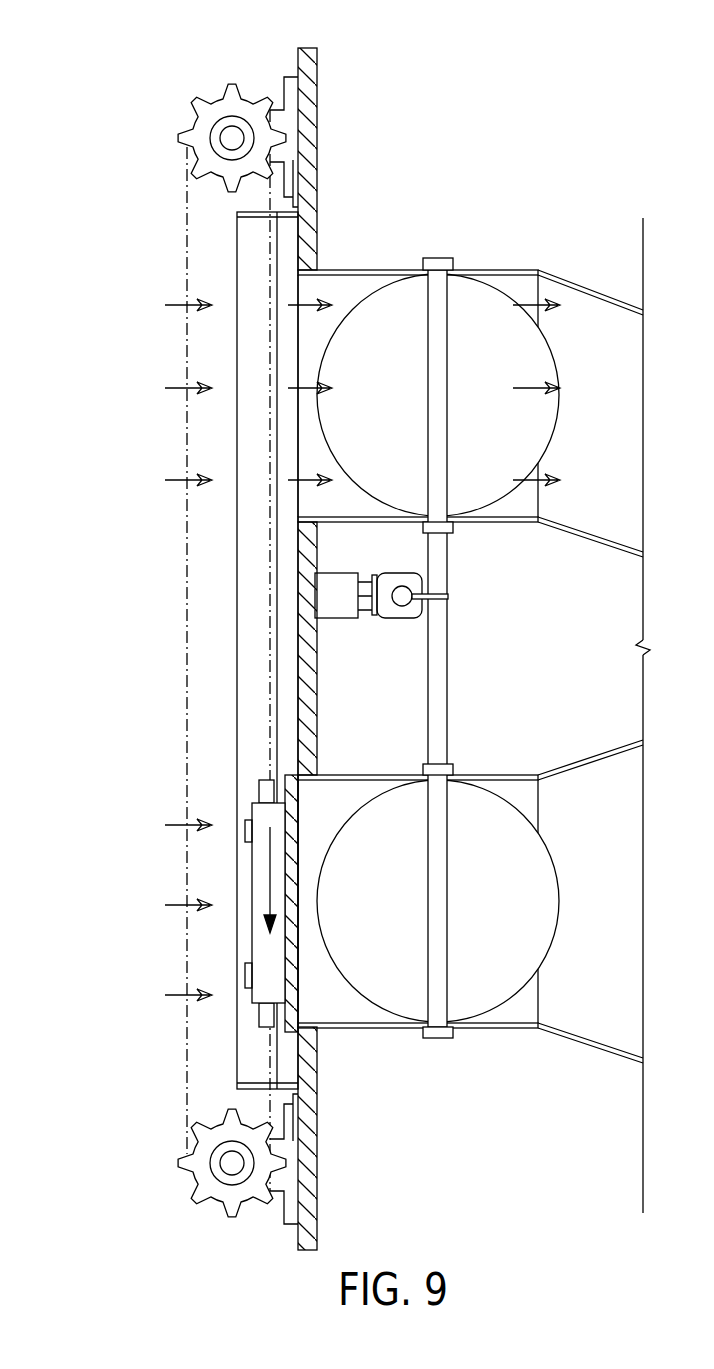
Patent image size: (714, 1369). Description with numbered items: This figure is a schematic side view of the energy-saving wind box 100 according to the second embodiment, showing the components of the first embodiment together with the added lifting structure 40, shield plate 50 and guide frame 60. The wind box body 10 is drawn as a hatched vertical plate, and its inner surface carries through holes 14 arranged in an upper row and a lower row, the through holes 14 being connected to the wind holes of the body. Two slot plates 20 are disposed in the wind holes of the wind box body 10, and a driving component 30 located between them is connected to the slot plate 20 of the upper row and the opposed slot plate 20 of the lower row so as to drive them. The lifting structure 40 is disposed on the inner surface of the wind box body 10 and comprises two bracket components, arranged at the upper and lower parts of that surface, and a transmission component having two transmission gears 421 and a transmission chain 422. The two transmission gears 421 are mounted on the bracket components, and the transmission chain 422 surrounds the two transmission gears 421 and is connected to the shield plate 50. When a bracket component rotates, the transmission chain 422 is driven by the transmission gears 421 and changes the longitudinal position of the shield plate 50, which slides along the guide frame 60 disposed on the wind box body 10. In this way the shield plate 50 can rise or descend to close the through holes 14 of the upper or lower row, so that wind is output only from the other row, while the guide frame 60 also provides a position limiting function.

The wind box body 10 is at (320, 112).
The through hole 14 is at (298, 359).
The slot plate 20 is at (484, 292).
The driving component 30 is at (460, 612).
The lifting structure 40 is at (278, 92).
The shield plate 50 is at (253, 882).
The guide frame 60 is at (235, 740).
The energy-saving wind box 100 is at (163, 215).
The transmission gear 421 is at (198, 112).
The transmission chain 422 is at (187, 262).